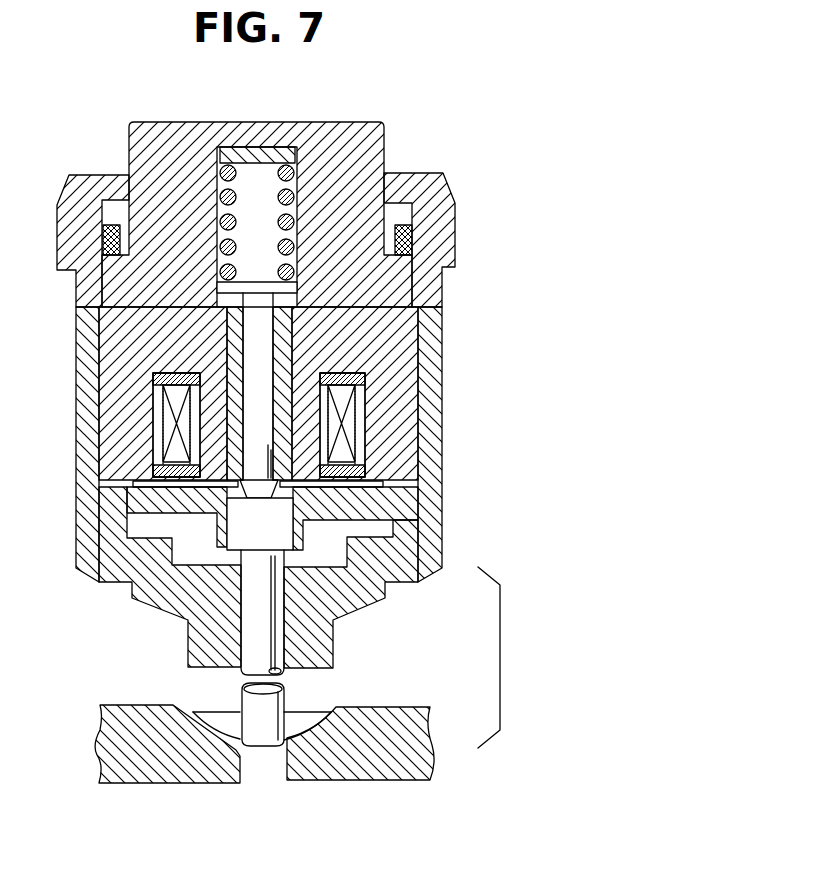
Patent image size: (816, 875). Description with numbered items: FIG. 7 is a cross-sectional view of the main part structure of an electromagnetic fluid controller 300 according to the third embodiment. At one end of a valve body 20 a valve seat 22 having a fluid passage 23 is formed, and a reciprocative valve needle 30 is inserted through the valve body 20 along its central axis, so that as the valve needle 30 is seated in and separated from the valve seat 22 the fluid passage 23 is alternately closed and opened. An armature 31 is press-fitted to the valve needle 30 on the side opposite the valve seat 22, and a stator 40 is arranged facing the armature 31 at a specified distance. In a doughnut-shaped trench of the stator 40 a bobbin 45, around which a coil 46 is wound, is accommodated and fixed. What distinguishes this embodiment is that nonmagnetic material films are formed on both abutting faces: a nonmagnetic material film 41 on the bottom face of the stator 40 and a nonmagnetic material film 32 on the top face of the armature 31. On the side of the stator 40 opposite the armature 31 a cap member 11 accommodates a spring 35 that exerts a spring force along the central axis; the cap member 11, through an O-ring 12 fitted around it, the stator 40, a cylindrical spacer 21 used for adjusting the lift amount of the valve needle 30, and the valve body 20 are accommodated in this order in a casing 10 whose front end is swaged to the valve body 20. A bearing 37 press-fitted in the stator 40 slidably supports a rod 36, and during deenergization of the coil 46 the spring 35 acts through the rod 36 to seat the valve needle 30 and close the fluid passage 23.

The electromagnetic fluid controller 300 is at (95, 135).
The casing 10 is at (447, 197).
The cap member 11 is at (168, 122).
The O-ring 12 is at (410, 235).
The spring 35 is at (293, 180).
The bearing 37 is at (288, 323).
The rod 36 is at (262, 352).
The bobbin 45 is at (347, 370).
The coil 46 is at (342, 402).
The stator 40 is at (408, 433).
The nonmagnetic material film 41 is at (132, 512).
The nonmagnetic material film 32 is at (157, 468).
The armature 31 is at (383, 485).
The spacer 21 is at (417, 510).
The valve needle 30 is at (333, 622).
The valve body 20 is at (317, 647).
The valve seat 22 is at (277, 746).
The fluid passage 23 is at (257, 770).